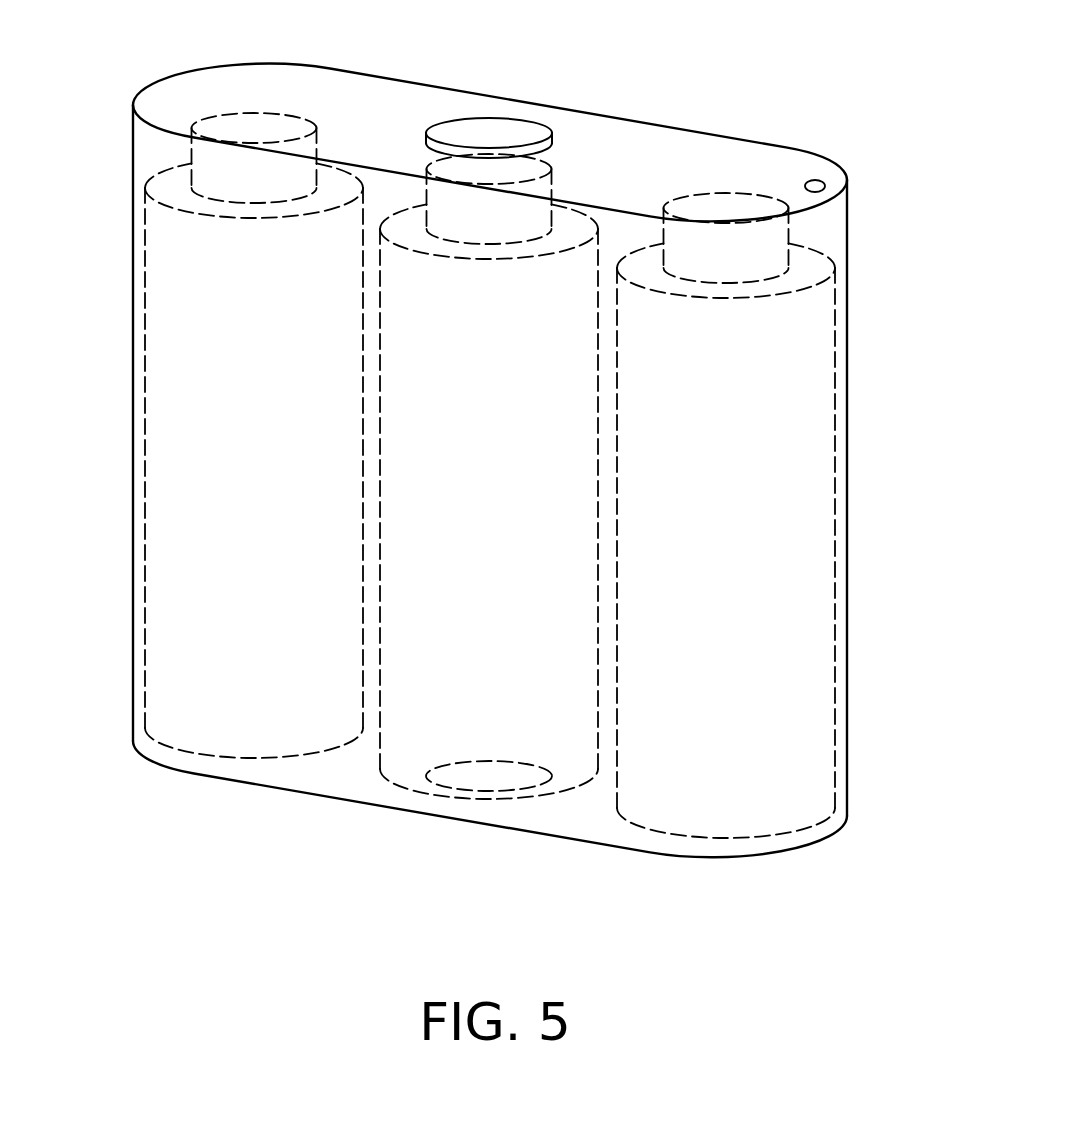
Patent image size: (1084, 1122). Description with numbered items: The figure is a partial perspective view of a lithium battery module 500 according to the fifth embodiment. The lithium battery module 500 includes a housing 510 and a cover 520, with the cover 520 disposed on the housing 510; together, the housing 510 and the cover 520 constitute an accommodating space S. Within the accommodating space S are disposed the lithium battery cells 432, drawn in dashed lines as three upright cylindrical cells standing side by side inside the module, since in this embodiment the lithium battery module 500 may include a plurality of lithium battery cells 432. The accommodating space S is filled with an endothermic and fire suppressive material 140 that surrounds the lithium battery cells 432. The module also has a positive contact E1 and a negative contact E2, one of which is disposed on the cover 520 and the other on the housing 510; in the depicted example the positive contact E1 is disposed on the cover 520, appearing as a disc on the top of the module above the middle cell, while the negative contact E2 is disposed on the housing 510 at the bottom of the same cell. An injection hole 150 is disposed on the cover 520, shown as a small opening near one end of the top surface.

The lithium battery module 500 is at (498, 467).
The accommodating space S is at (487, 428).
The housing 510 is at (842, 462).
The cover 520 is at (262, 78).
The injection hole 150 is at (816, 180).
The endothermic and fire suppressive material 140 is at (836, 320).
The lithium battery cell 432 is at (228, 760).
The positive contact E1 is at (496, 128).
The negative contact E2 is at (480, 793).